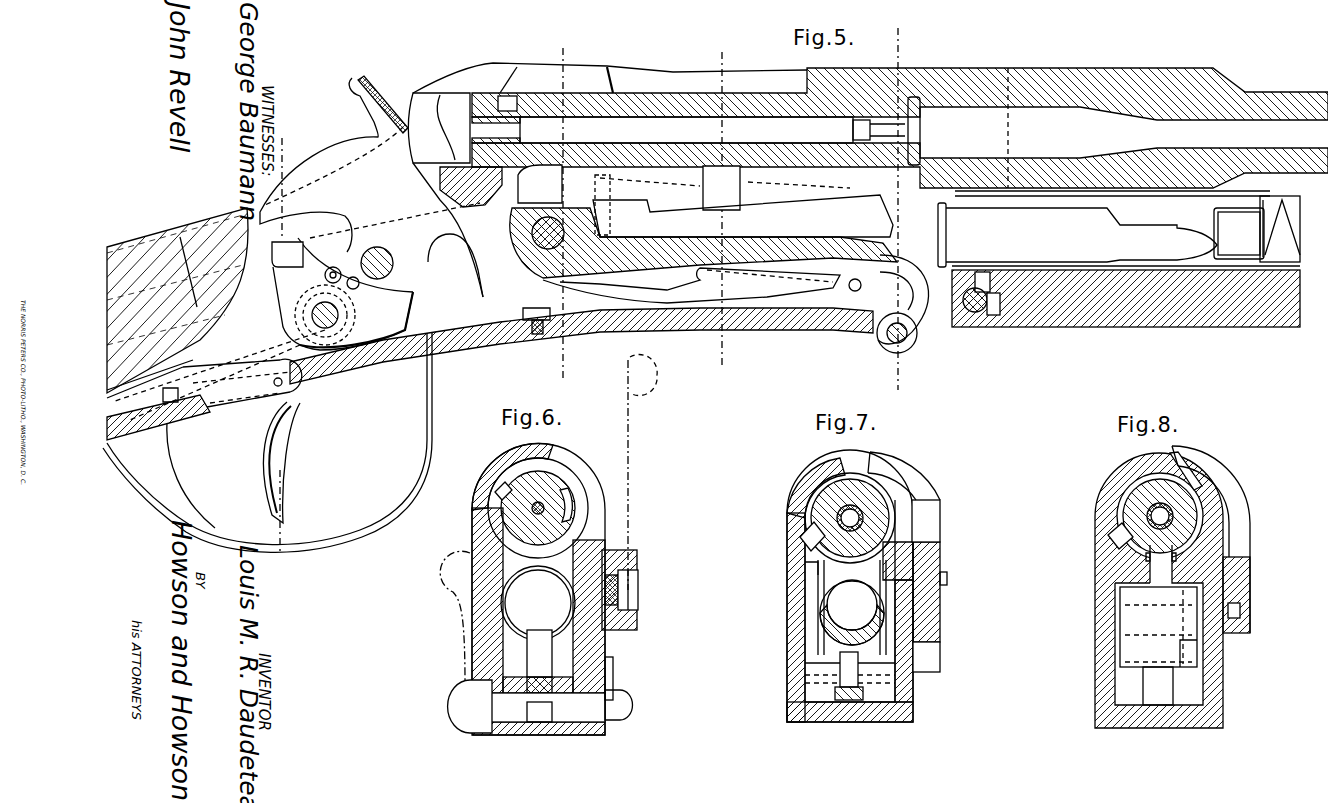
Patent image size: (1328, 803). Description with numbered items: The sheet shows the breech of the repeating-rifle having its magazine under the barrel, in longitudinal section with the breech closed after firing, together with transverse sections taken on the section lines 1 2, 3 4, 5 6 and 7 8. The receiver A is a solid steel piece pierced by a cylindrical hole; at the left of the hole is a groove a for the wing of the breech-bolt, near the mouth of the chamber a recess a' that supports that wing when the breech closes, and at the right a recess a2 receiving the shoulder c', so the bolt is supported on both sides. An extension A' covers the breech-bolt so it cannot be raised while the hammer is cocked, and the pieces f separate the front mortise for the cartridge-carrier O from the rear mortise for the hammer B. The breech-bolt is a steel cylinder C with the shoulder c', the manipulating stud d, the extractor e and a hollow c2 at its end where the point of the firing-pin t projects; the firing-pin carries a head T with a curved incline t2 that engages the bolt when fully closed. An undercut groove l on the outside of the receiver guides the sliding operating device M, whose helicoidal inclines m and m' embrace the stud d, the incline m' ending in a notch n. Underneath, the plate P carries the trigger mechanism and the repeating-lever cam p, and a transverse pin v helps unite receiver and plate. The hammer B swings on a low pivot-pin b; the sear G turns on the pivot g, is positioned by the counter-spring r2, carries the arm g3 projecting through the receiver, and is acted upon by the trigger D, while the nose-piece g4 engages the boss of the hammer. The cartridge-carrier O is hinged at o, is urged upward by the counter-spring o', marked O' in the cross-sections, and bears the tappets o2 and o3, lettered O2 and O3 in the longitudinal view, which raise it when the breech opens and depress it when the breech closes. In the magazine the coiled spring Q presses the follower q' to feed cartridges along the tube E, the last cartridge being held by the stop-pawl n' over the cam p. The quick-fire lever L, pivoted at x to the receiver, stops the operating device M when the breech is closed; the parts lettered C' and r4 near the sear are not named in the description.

In FIG. 5, the receiver A is at (693, 249).
In FIG. 6, the receiver A is at (522, 589).
In FIG. 7, the receiver A is at (839, 586).
In FIG. 8, the receiver A is at (1142, 590).
In FIG. 5, the extension A' is at (610, 77).
In FIG. 8, the extension A' is at (1116, 455).
In FIG. 5, the hammer B is at (371, 186).
In FIG. 5, the breech-bolt cylinder C is at (900, 128).
In FIG. 6, the breech-bolt cylinder C is at (538, 508).
In FIG. 7, the breech-bolt cylinder C is at (850, 518).
In FIG. 8, the breech-bolt cylinder C is at (1160, 516).
In FIG. 5, the sear lever C' is at (338, 375).
In FIG. 5, the trigger D is at (281, 462).
In FIG. 5, the tube E is at (1077, 233).
In FIG. 6, the tube E is at (538, 603).
In FIG. 5, the sear G is at (343, 308).
In FIG. 6, the quick-fire lever L is at (642, 472).
In FIG. 7, the operating device M is at (940, 555).
In FIG. 8, the operating device M is at (1250, 570).
In FIG. 5, the cartridge-carrier O is at (718, 249).
In FIG. 7, the cartridge-carrier O is at (852, 607).
In FIG. 8, the cartridge-carrier O is at (1158, 627).
In FIG. 7, the counter-spring O' is at (850, 676).
In FIG. 8, the counter-spring O' is at (1158, 686).
In FIG. 5, the tappet O2 is at (540, 184).
In FIG. 5, the tappet O3 is at (721, 188).
In FIG. 5, the plate P is at (490, 372).
In FIG. 6, the plate P is at (540, 706).
In FIG. 7, the plate P is at (845, 733).
In FIG. 8, the plate P is at (1170, 743).
In FIG. 5, the coiled spring Q is at (1280, 229).
In FIG. 5, the firing-pin head T is at (440, 128).
In FIG. 7, the groove a is at (812, 536).
In FIG. 8, the groove a is at (1120, 536).
In FIG. 6, the recess a' is at (479, 495).
In FIG. 6, the recess a2 is at (590, 488).
In FIG. 7, the recess a2 is at (886, 483).
In FIG. 5, the pivot-pin b is at (383, 263).
In FIG. 7, the shoulder c' is at (893, 519).
In FIG. 5, the hollow c2 is at (923, 131).
In FIG. 7, the manipulating stud d is at (926, 521).
In FIG. 6, the extractor e is at (589, 517).
In FIG. 5, the separating pieces f is at (487, 200).
In FIG. 5, the sear pivot g is at (325, 315).
In FIG. 5, the sear arm g3 is at (287, 254).
In FIG. 5, the nose-piece g4 is at (436, 316).
In FIG. 7, the dovetailed groove l is at (945, 590).
In FIG. 8, the dovetailed groove l is at (1250, 598).
In FIG. 7, the helicoidal incline m is at (904, 476).
In FIG. 8, the helicoidal incline m' is at (1211, 539).
In FIG. 7, the notch n is at (850, 518).
In FIG. 8, the notch n is at (1160, 516).
In FIG. 5, the stop-pawl n' is at (889, 299).
In FIG. 6, the stop-pawl n' is at (539, 661).
In FIG. 5, the hinge o is at (572, 278).
In FIG. 8, the hinge o is at (1175, 617).
In FIG. 5, the counter-spring o' is at (740, 284).
In FIG. 8, the tappet o2 is at (1159, 576).
In FIG. 7, the tappet o3 is at (816, 567).
In FIG. 5, the repeating-lever cam p is at (918, 338).
In FIG. 6, the repeating-lever cam p is at (539, 707).
In FIG. 5, the follower q' is at (1239, 233).
In FIG. 5, the counter-spring r2 is at (218, 375).
In FIG. 5, the spring arm r4 is at (465, 318).
In FIG. 5, the firing-pin t is at (712, 130).
In FIG. 5, the curved incline t2 is at (477, 94).
In FIG. 5, the transverse pin v is at (975, 312).
In FIG. 6, the pivot x is at (638, 590).
In FIG. 5, the section line 1 2 1 is at (900, 207).
In FIG. 5, the section line 1 2 is at (896, 385).
In FIG. 5, the section line 3 4 3 is at (722, 199).
In FIG. 5, the section line 3 4 is at (733, 369).
In FIG. 5, the section line 5 6 5 is at (563, 205).
In FIG. 5, the section line 5 6 is at (564, 375).
In FIG. 5, the section line 7 8 7 is at (282, 179).
In FIG. 5, the section line 7 8 is at (286, 517).